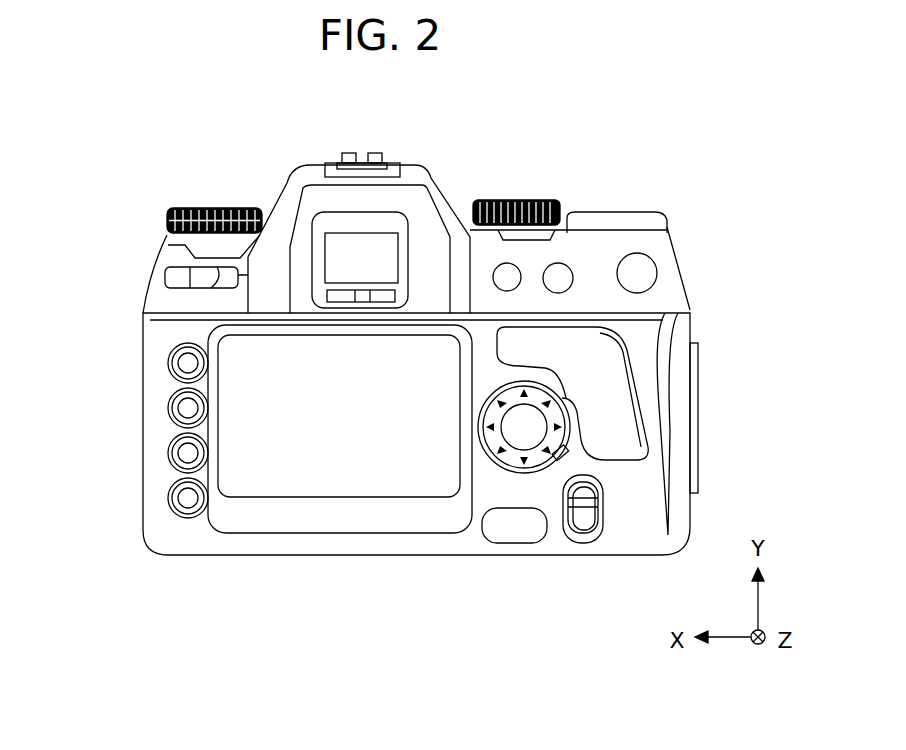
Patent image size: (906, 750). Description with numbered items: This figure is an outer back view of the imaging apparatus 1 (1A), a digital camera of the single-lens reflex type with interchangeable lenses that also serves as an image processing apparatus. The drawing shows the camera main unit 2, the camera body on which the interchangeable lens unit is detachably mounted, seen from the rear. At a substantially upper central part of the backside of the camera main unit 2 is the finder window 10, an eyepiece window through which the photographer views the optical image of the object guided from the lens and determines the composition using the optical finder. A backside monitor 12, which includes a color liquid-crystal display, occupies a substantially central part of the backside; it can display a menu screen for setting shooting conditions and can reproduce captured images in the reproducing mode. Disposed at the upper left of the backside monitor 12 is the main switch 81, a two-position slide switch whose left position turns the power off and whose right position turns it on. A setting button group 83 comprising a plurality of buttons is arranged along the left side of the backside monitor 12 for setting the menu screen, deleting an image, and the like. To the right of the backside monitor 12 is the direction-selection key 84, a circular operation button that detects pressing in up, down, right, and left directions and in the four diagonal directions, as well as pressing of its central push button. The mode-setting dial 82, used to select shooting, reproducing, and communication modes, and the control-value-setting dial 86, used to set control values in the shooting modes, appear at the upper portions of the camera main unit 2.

The imaging apparatus 1 is at (747, 117).
The imaging apparatus 1A is at (414, 424).
The camera main unit 2 is at (687, 393).
The finder window 10 is at (355, 243).
The backside monitor 12 is at (339, 487).
The main switch 81 is at (165, 274).
The mode-setting dial 82 is at (612, 212).
The setting button group 83 is at (130, 343).
The direction-selection key 84 is at (535, 470).
The control-value-setting dial 86 is at (212, 208).